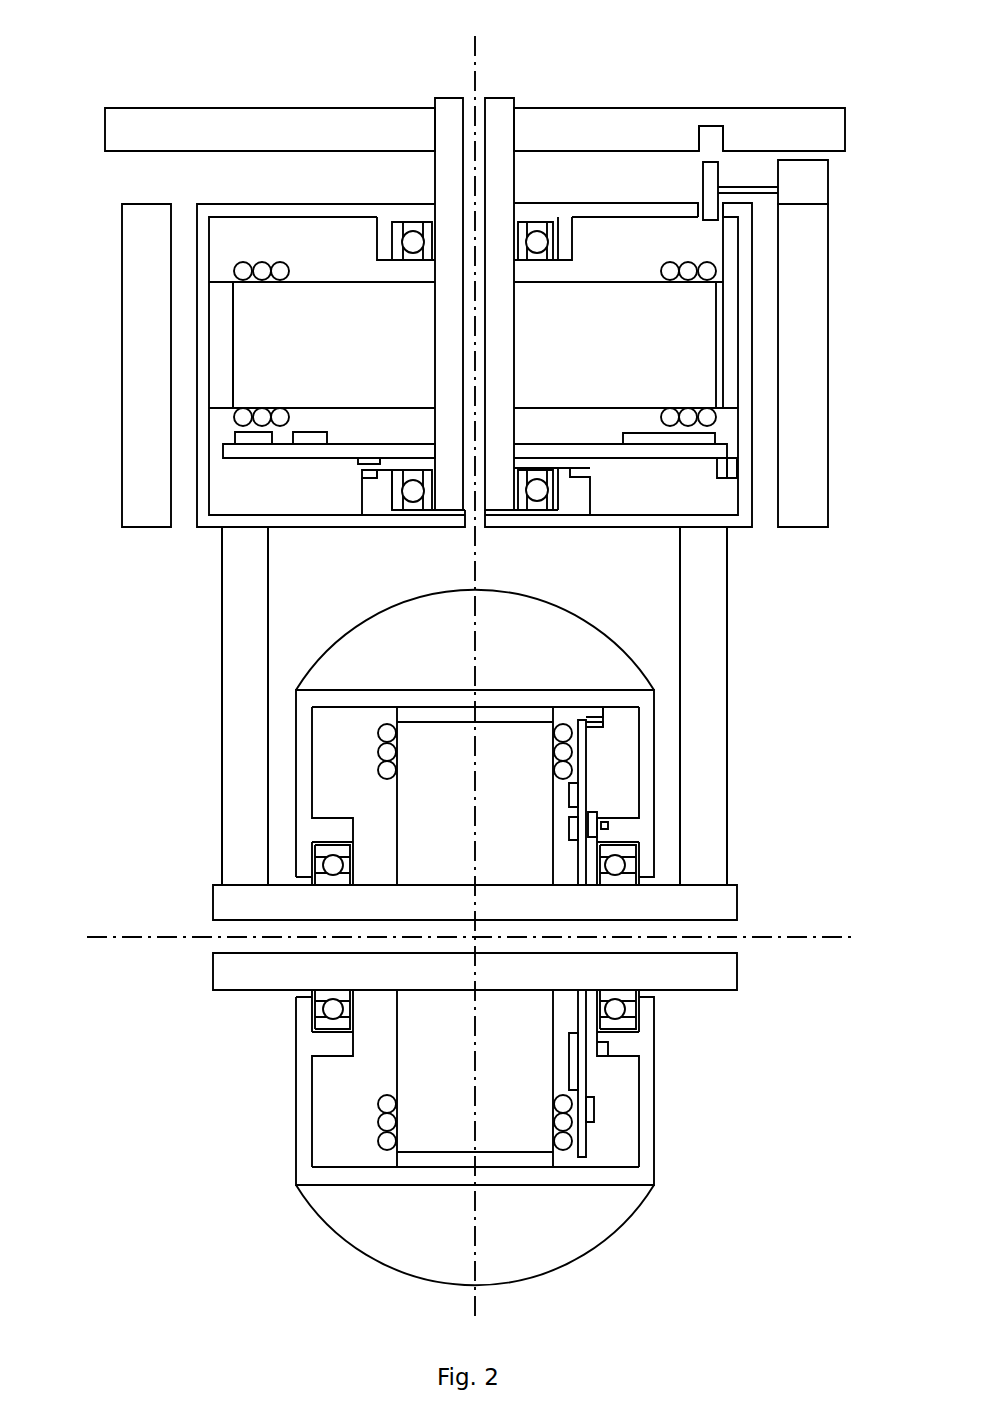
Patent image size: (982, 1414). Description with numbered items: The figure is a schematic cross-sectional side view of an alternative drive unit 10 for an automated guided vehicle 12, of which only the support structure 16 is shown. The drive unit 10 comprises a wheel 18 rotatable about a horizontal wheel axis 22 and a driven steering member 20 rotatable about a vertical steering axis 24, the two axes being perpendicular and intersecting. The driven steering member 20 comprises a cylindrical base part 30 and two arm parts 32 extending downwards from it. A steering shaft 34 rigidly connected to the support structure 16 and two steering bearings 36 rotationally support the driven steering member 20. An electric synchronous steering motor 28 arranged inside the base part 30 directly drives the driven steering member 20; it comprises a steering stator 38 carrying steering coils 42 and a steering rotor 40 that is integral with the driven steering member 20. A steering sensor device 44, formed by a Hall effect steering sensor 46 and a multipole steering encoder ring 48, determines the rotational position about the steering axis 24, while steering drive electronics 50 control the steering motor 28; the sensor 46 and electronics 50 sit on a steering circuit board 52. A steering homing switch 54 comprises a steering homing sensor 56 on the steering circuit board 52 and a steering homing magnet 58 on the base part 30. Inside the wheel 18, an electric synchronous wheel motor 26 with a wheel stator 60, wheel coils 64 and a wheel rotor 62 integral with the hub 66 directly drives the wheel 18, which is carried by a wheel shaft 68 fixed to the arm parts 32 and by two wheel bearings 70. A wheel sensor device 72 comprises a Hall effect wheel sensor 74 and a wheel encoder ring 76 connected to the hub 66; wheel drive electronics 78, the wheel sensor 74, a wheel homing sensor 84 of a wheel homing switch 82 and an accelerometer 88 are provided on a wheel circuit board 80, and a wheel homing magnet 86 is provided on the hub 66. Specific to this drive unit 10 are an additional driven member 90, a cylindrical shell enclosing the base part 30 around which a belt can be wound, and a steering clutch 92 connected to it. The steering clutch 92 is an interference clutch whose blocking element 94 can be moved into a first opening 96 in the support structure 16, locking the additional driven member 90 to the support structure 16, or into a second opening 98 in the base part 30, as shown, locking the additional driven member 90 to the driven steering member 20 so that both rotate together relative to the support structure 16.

The drive unit 10 is at (147, 70).
The automated guided vehicle 12 is at (802, 70).
The support structure 16 is at (377, 141).
The wheel 18 is at (439, 1247).
The driven steering member 20 is at (243, 620).
The wheel axis 22 is at (100, 937).
The steering axis 24 is at (474, 46).
The wheel motor 26 is at (195, 768).
The steering motor 28 is at (190, 198).
The base part 30 is at (262, 213).
The arm parts 32 is at (243, 667).
The steering shaft 34 is at (500, 106).
The steering bearings 36 is at (414, 250).
The steering stator 38 is at (600, 357).
The steering rotor 40 is at (220, 342).
The steering coils 42 is at (262, 277).
The steering sensor device 44 is at (276, 479).
The Hall effect steering sensor 46 is at (357, 461).
The steering encoder ring 48 is at (362, 479).
The steering drive electronics 50 is at (625, 440).
The steering circuit board 52 is at (408, 452).
The steering homing switch 54 is at (754, 542).
The steering homing sensor 56 is at (717, 463).
The steering homing magnet 58 is at (731, 473).
The wheel stator 60 is at (451, 829).
The wheel rotor 62 is at (490, 713).
The wheel coils 64 is at (393, 751).
The hub 66 is at (305, 1100).
The wheel shaft 68 is at (718, 905).
The wheel bearings 70 is at (333, 868).
The wheel sensor device 72 is at (792, 786).
The Hall effect wheel sensor 74 is at (598, 815).
The wheel encoder ring 76 is at (608, 826).
The wheel drive electronics 78 is at (573, 1063).
The wheel circuit board 80 is at (580, 1018).
The wheel homing switch 82 is at (577, 682).
The wheel homing sensor 84 is at (596, 727).
The wheel homing magnet 86 is at (594, 707).
The accelerometer 88 is at (594, 1110).
The additional driven member 90 is at (808, 345).
The steering clutch 92 is at (819, 192).
The blocking element 94 is at (710, 190).
The first opening 96 is at (699, 136).
The second opening 98 is at (700, 213).